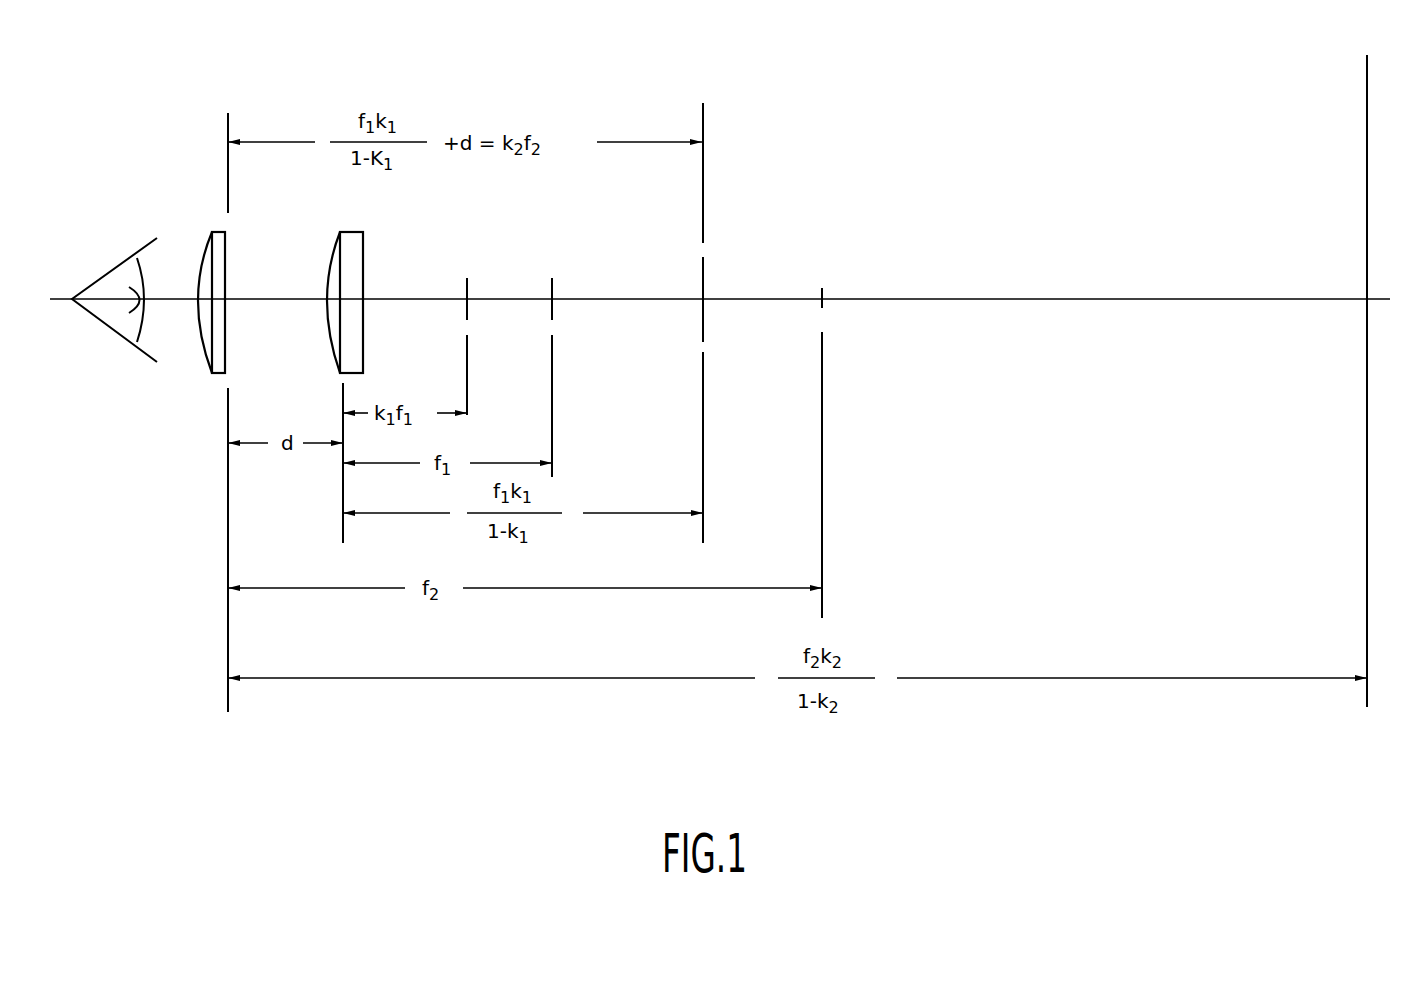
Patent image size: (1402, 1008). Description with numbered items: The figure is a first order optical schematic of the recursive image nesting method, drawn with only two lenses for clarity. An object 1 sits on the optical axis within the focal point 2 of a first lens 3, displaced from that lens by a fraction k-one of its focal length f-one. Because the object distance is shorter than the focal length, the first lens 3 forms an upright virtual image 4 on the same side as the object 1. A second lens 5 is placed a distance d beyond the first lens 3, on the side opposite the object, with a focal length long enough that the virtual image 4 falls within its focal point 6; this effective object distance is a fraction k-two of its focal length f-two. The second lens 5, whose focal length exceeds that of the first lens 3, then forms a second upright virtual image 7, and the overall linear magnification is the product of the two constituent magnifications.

The object 1 is at (467, 290).
The focal point 2 is at (552, 305).
The first lens 3 is at (352, 277).
The virtual image 4 is at (703, 332).
The second lens 5 is at (217, 277).
The focal point 6 is at (822, 356).
The second virtual image 7 is at (1367, 270).